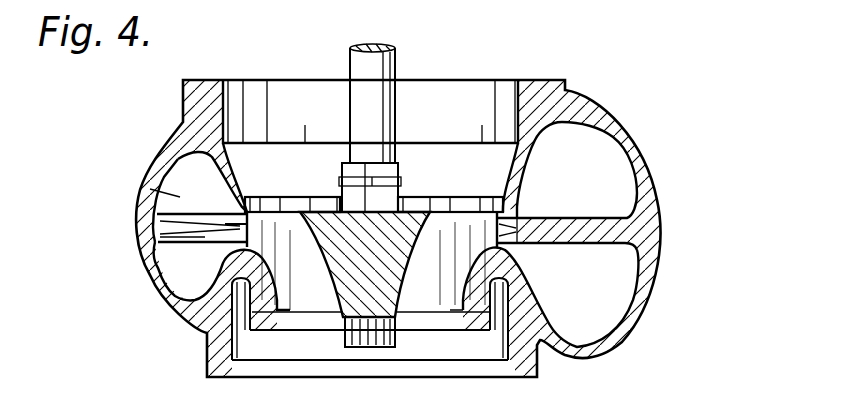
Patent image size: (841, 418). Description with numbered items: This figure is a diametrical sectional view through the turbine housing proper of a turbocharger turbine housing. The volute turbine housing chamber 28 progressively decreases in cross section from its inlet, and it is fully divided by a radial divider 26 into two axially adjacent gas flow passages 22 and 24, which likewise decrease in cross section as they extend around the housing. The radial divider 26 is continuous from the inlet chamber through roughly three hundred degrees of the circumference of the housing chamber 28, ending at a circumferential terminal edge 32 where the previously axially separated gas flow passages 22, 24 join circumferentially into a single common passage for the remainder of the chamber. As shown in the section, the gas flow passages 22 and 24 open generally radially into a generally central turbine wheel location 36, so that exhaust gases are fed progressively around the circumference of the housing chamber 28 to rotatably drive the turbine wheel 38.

The gas flow passage 22 is at (178, 265).
The gas flow passage 24 is at (187, 172).
The radial divider 26 is at (590, 233).
The housing chamber 28 is at (186, 199).
The circumferential terminal edge 32 is at (187, 232).
The turbine wheel location 36 is at (482, 232).
The turbine wheel 38 is at (448, 230).